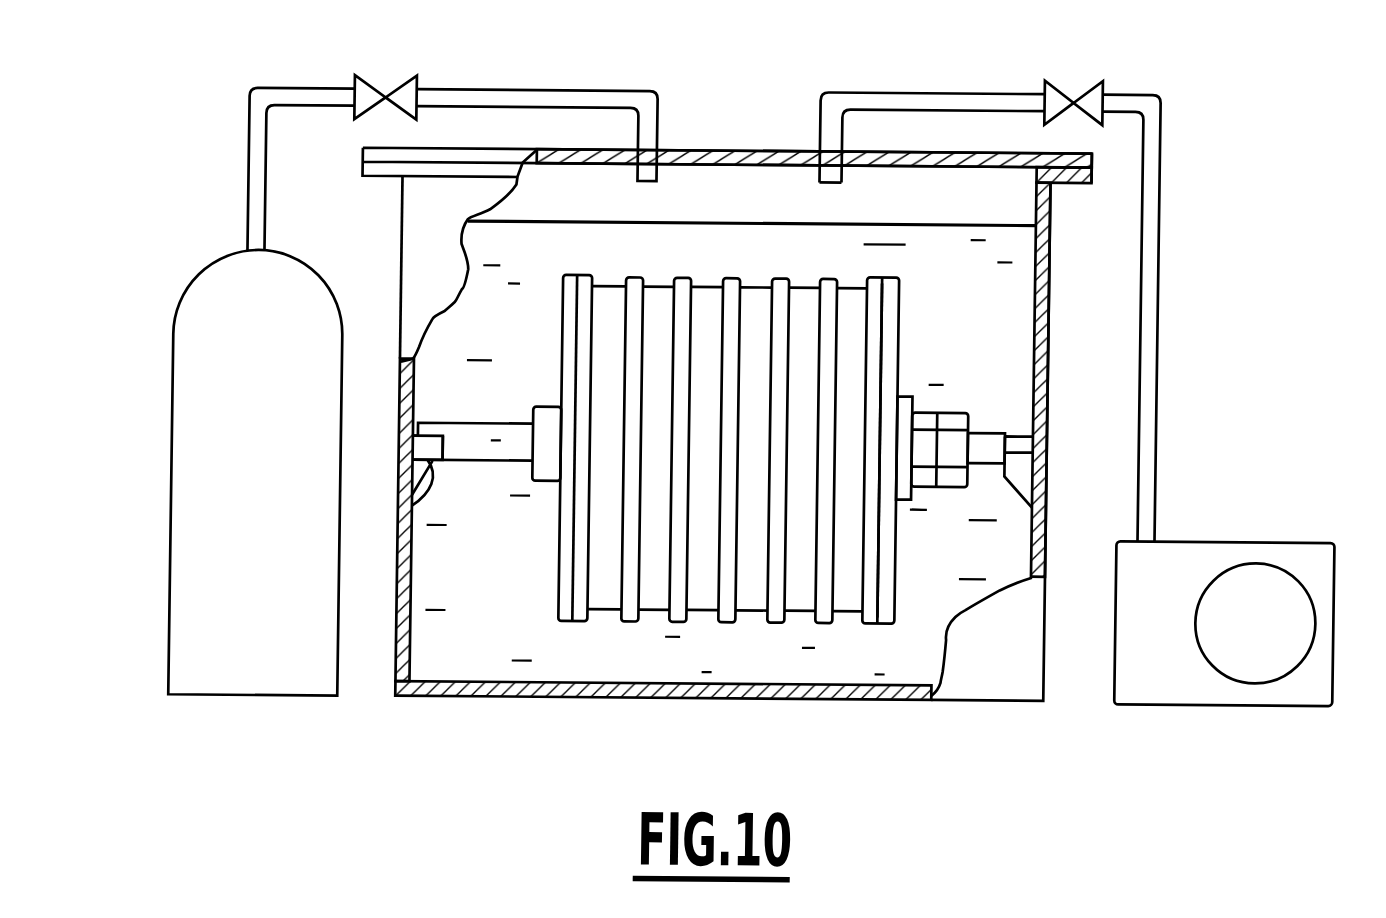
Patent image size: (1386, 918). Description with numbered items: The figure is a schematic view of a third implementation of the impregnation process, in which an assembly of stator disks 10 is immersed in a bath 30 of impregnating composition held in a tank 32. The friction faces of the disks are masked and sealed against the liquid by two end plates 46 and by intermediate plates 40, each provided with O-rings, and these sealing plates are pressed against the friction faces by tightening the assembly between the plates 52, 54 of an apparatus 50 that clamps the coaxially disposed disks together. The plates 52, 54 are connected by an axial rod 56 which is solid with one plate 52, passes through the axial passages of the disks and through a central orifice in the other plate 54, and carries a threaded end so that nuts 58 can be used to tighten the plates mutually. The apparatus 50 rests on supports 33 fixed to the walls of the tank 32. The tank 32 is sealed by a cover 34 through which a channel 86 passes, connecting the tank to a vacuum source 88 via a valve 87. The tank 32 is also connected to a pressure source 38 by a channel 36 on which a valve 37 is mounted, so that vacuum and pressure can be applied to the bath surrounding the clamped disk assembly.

The stator disks 10 is at (699, 585).
The bath 30 is at (830, 246).
The tank 32 is at (1047, 265).
The supports 33 is at (426, 468).
The cover 34 is at (767, 151).
The channel 36 is at (648, 134).
The valve 37 is at (403, 79).
The pressure source 38 is at (205, 296).
The intermediate plates 40 is at (677, 284).
The end plates 46 is at (578, 586).
The apparatus 50 is at (897, 396).
The plate 52 is at (562, 557).
The plate 54 is at (898, 568).
The axial rod 56 is at (1007, 440).
The nuts 58 is at (951, 423).
The channel 86 is at (899, 92).
The valve 87 is at (1092, 88).
The vacuum source 88 is at (1294, 555).